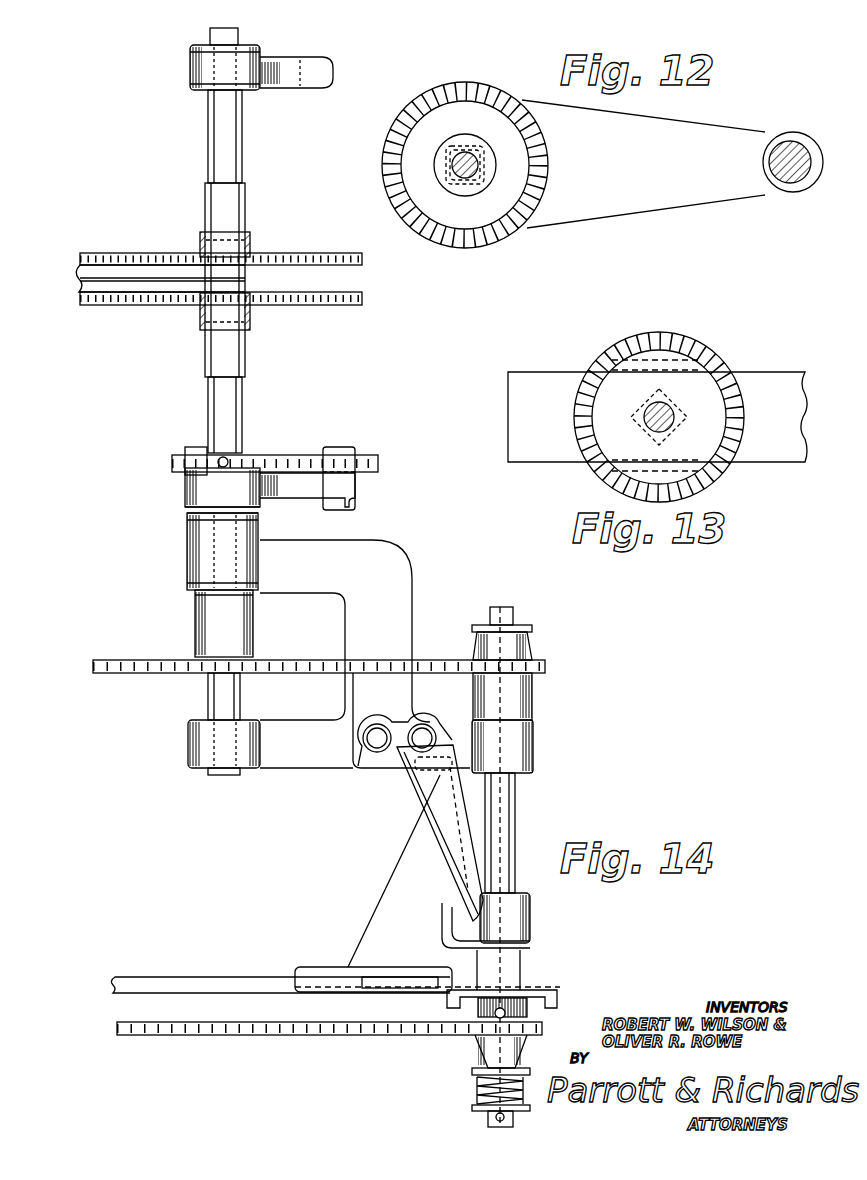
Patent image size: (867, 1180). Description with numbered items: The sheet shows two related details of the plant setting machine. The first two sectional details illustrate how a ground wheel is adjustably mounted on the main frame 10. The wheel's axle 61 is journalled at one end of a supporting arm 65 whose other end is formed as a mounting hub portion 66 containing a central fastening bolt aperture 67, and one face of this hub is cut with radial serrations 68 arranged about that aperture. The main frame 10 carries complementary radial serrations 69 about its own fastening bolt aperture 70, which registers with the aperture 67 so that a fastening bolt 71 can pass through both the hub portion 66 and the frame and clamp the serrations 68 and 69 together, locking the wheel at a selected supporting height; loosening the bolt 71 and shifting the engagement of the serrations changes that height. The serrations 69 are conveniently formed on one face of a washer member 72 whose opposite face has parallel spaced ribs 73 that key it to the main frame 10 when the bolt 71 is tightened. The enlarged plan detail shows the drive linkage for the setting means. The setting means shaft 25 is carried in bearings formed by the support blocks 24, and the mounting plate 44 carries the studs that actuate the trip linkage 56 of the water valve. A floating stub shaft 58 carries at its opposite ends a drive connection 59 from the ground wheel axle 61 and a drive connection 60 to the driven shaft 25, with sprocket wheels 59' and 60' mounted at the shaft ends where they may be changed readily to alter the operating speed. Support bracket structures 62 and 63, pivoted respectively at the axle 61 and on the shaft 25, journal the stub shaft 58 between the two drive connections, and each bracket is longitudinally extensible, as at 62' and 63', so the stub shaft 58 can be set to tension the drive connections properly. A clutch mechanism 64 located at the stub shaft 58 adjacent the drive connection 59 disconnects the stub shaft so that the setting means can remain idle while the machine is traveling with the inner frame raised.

In FIG. 13, the main frame 10 is at (527, 370).
In FIG. 14, the support block 24 is at (333, 72).
In FIG. 14, the setting means shaft 25 is at (242, 398).
In FIG. 14, the mounting plate 44 is at (250, 250).
In FIG. 14, the trip linkage 56 is at (362, 462).
In FIG. 14, the floating stub shaft 58 is at (515, 805).
In FIG. 14, the drive connection 59 is at (329, 1046).
In FIG. 14, the sprocket wheel 59' is at (472, 1081).
In FIG. 14, the drive connection 60 is at (319, 637).
In FIG. 14, the sprocket wheel 60' is at (527, 633).
In FIG. 12, the axle 61 is at (787, 183).
In FIG. 14, the support bracket structure 62 is at (383, 871).
In FIG. 14, the extensible portion 62' is at (427, 994).
In FIG. 14, the support bracket structure 63 is at (423, 833).
In FIG. 14, the extensible portion 63' is at (383, 767).
In FIG. 14, the clutch mechanism 64 is at (530, 1007).
In FIG. 12, the supporting arm 65 is at (657, 200).
In FIG. 12, the mounting hub portion 66 is at (468, 248).
In FIG. 12, the fastening bolt aperture 67 is at (470, 157).
In FIG. 12, the radial serrations 68 is at (507, 237).
In FIG. 13, the radial serrations 69 is at (652, 331).
In FIG. 13, the fastening bolt aperture 70 is at (675, 420).
In FIG. 12, the fastening bolt 71 is at (470, 165).
In FIG. 13, the fastening bolt 71 is at (672, 412).
In FIG. 13, the washer member 72 is at (707, 348).
In FIG. 13, the parallel spaced ribs 73 is at (623, 343).